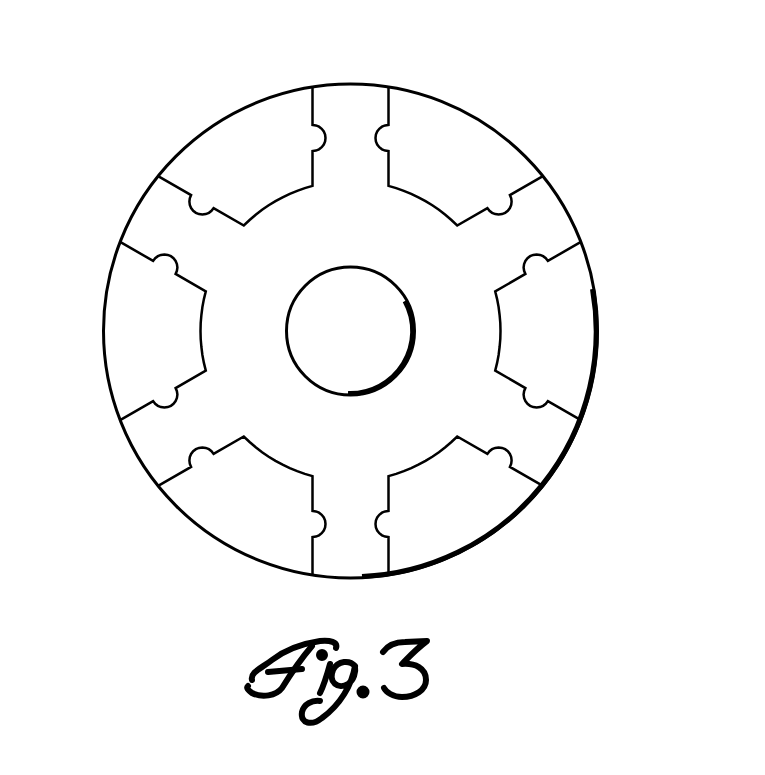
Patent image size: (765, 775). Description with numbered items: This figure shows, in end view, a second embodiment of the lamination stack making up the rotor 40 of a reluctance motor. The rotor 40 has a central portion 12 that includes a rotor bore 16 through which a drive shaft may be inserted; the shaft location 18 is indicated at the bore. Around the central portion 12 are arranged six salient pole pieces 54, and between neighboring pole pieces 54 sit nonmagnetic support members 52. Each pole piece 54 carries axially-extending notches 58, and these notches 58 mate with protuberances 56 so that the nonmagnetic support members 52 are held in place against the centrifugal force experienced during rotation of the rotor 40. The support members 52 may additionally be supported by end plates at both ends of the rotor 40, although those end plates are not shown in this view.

The rotor 40 is at (105, 112).
The nonmagnetic support member 52 is at (270, 169).
The pole piece 54 is at (348, 83).
The protuberance 56 is at (386, 136).
The axially-extending notch 58 is at (383, 133).
The central portion 12 is at (445, 208).
The rotor bore 16 is at (365, 311).
The shaft 18 is at (343, 393).